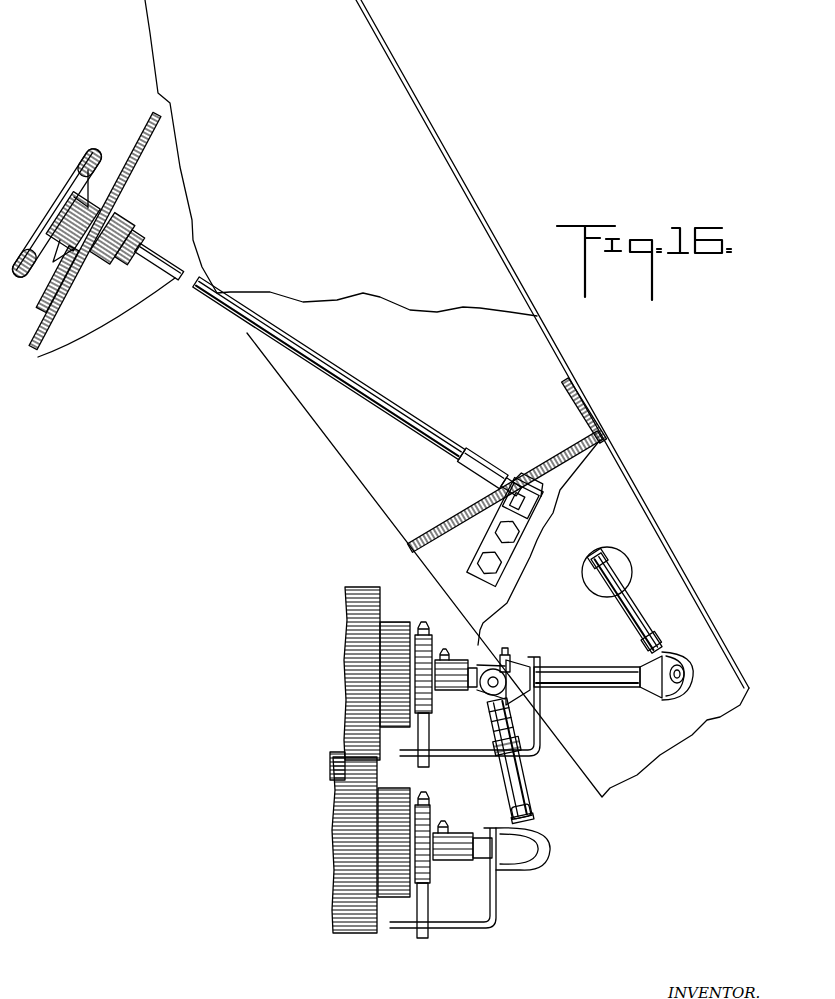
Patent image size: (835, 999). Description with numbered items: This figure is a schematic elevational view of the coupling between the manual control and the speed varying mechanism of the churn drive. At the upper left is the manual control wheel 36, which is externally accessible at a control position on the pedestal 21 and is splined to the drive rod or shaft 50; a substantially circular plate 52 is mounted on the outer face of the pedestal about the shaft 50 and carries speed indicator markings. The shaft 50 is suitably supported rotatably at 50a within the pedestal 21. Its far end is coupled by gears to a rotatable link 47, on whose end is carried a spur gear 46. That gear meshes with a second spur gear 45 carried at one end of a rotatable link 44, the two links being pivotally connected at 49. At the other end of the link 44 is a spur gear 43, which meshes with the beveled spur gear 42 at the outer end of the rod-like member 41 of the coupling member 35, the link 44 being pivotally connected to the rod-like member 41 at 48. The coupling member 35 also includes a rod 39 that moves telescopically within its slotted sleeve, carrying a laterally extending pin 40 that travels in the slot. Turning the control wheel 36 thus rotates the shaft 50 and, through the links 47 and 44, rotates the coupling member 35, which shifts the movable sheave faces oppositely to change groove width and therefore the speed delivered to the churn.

The pedestal 21 is at (286, 144).
The manual control wheel 36 is at (63, 200).
The substantially circular plate 52 is at (120, 162).
The drive rod or shaft 50 is at (390, 404).
The rotatable support 50a is at (510, 477).
The pivotal connection 48 is at (505, 655).
The beveled spur gear 42 is at (483, 698).
The spur gear 43 is at (520, 665).
The rotatable link 44 is at (590, 676).
The second spur gear 45 is at (656, 694).
The spur gear 46 is at (676, 690).
The pivotal connection 49 is at (664, 658).
The rotatable link 47 is at (630, 603).
The coupling member 35 is at (514, 768).
The rod-like member 41 is at (493, 742).
The laterally extending pin 40 is at (531, 790).
The rod 39 is at (540, 818).